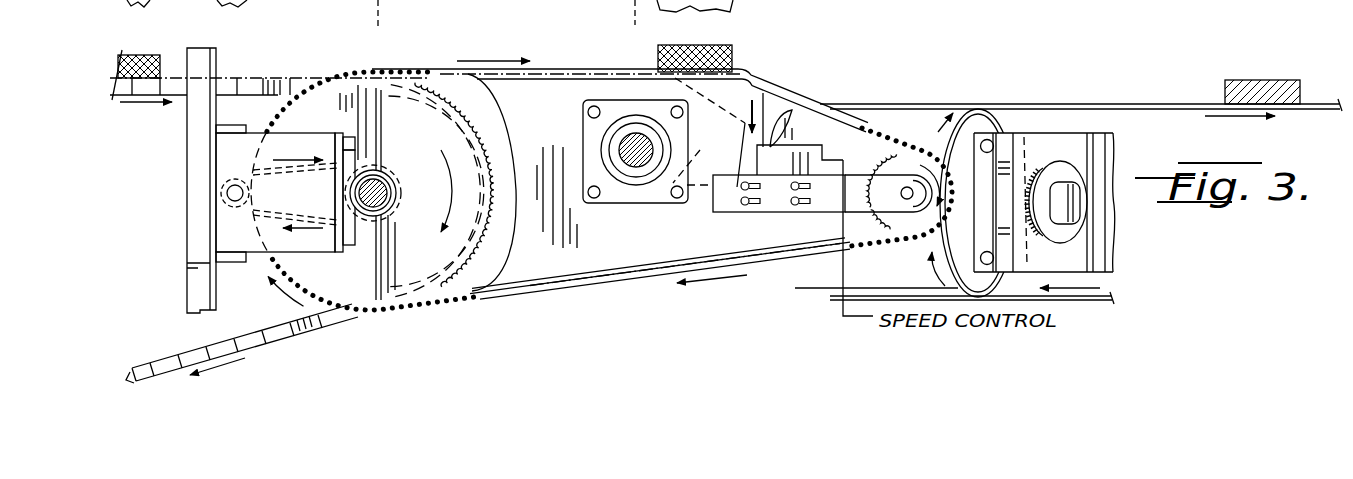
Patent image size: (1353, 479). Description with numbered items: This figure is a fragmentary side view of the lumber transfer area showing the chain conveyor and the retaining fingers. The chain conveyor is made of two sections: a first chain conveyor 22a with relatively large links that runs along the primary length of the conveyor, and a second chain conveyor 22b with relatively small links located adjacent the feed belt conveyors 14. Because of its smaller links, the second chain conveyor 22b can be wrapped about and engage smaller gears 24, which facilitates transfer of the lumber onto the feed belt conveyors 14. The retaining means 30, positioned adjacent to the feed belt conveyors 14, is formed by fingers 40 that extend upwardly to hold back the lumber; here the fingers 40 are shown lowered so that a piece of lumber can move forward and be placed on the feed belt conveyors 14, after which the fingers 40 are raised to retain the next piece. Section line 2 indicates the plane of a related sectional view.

The section line 2- 2 is at (323, 48).
The feed belt conveyor 14 is at (1062, 103).
The first chain conveyor 22a is at (289, 330).
The second chain conveyor 22b is at (428, 305).
The gear 24 is at (913, 242).
The retaining means 30 is at (648, 78).
The finger 40 is at (742, 68).